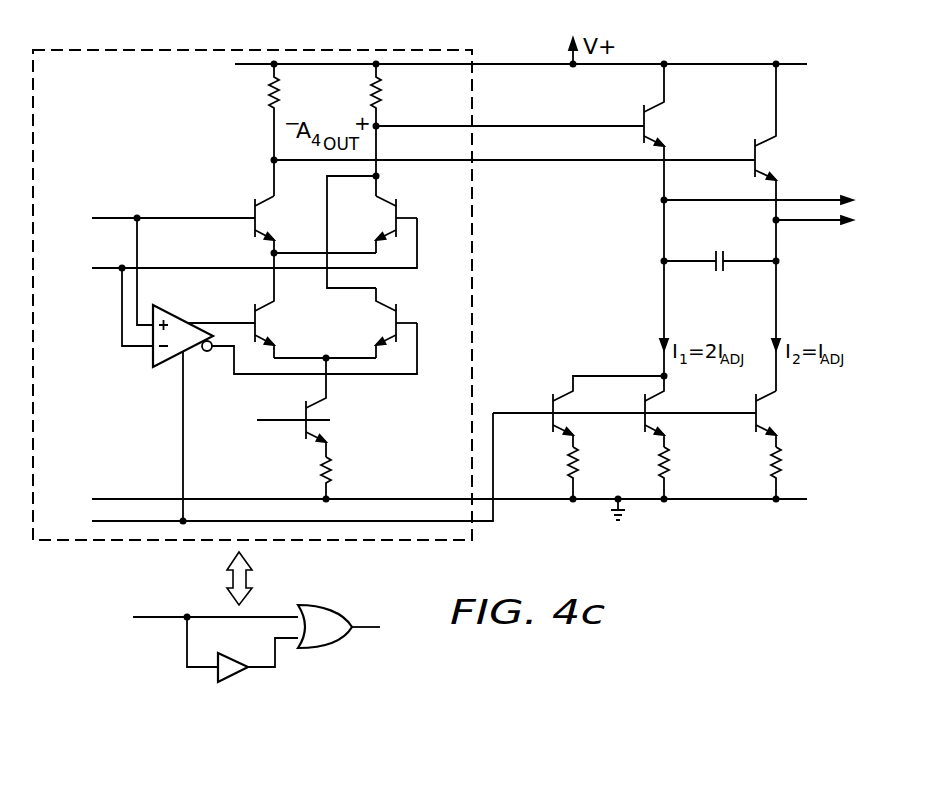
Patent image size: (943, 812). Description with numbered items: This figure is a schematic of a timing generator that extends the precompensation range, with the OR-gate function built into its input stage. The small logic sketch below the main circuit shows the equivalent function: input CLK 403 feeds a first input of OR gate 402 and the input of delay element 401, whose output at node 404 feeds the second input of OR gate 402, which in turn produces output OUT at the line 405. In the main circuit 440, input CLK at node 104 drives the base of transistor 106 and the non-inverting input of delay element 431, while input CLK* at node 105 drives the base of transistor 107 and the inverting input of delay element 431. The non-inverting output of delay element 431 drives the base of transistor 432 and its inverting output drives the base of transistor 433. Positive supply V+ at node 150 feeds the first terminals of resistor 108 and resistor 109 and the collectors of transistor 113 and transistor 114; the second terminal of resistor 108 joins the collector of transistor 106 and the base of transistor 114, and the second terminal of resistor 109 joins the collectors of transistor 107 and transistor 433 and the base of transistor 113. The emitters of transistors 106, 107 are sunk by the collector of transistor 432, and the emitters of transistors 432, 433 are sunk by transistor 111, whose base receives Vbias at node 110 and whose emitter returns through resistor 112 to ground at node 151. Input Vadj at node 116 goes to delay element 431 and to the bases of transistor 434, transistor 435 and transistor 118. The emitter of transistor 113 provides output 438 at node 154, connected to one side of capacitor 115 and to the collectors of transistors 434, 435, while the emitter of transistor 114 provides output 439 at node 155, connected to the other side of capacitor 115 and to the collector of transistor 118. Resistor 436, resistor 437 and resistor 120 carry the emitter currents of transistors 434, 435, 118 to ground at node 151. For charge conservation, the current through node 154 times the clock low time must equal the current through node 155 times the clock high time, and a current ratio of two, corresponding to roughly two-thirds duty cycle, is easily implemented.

The circuit 440 is at (114, 113).
The node 150 is at (506, 66).
The resistor 108 is at (272, 92).
The resistor 109 is at (373, 92).
The node 104 is at (107, 213).
The node 105 is at (108, 272).
The transistor 106 is at (255, 202).
The transistor 107 is at (399, 200).
The delay element 431 is at (153, 356).
The transistor 432 is at (255, 306).
The transistor 433 is at (399, 305).
The transistor 111 is at (306, 404).
The node 110 is at (288, 426).
The resistor 112 is at (333, 466).
The node 116 is at (494, 513).
The node 151 is at (720, 501).
The transistor 113 is at (644, 108).
The transistor 114 is at (768, 140).
The output 438 is at (822, 197).
The output 439 is at (822, 223).
The node 154 is at (664, 282).
The node 155 is at (776, 282).
The capacitor 115 is at (720, 274).
The transistor 434 is at (553, 396).
The transistor 435 is at (645, 428).
The resistor 436 is at (568, 460).
The resistor 437 is at (659, 460).
The transistor 118 is at (756, 428).
The resistor 120 is at (771, 460).
The input CLK 403 is at (170, 619).
The delay element 401 is at (218, 673).
The node 404 is at (263, 669).
The OR gate 402 is at (313, 650).
The output line 405 is at (366, 629).